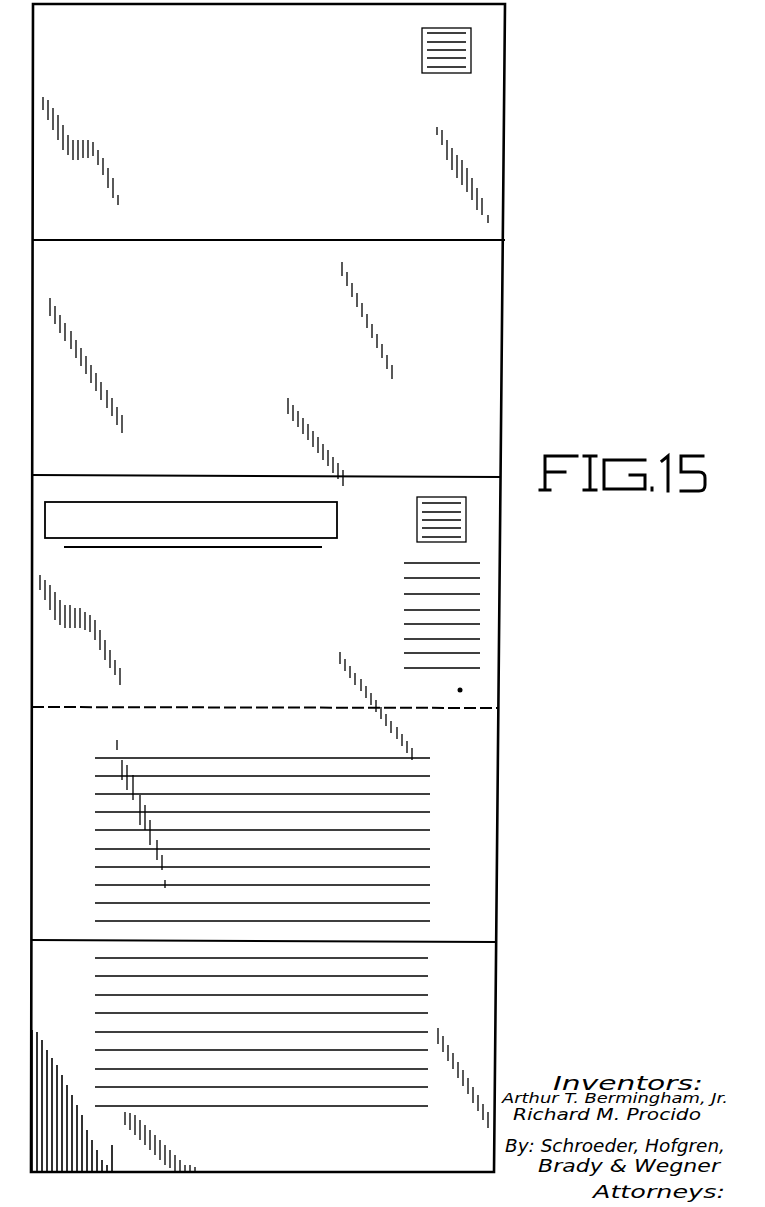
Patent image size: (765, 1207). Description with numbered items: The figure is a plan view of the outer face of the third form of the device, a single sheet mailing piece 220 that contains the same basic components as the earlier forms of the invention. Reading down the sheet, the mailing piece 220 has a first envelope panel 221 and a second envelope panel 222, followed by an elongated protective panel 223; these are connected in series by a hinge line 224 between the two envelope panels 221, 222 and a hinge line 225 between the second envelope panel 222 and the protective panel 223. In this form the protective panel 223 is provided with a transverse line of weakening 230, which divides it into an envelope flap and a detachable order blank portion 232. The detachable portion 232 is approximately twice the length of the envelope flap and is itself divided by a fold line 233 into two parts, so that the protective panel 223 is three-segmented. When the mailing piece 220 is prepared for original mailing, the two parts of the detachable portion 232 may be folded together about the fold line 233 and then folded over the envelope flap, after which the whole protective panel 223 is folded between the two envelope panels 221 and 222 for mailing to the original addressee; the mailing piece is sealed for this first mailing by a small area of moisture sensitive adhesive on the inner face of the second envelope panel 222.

The single sheet mailing piece 220 is at (516, 88).
The first envelope panel 221 is at (485, 305).
The second envelope panel 222 is at (488, 163).
The protective panel 223 is at (487, 555).
The hinge line 224 is at (496, 241).
The hinge line 225 is at (490, 477).
The transverse line of weakening 230 is at (487, 708).
The detachable order blank portion 232 is at (480, 838).
The fold line 233 is at (485, 943).